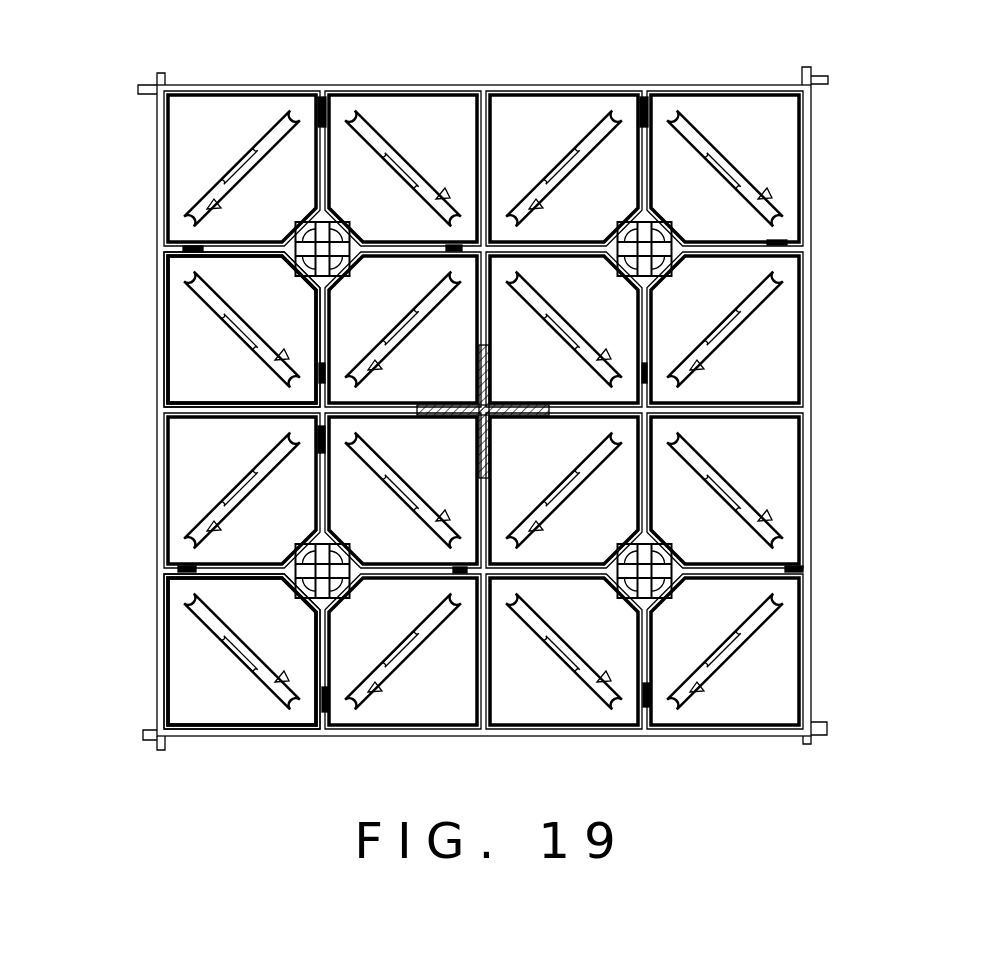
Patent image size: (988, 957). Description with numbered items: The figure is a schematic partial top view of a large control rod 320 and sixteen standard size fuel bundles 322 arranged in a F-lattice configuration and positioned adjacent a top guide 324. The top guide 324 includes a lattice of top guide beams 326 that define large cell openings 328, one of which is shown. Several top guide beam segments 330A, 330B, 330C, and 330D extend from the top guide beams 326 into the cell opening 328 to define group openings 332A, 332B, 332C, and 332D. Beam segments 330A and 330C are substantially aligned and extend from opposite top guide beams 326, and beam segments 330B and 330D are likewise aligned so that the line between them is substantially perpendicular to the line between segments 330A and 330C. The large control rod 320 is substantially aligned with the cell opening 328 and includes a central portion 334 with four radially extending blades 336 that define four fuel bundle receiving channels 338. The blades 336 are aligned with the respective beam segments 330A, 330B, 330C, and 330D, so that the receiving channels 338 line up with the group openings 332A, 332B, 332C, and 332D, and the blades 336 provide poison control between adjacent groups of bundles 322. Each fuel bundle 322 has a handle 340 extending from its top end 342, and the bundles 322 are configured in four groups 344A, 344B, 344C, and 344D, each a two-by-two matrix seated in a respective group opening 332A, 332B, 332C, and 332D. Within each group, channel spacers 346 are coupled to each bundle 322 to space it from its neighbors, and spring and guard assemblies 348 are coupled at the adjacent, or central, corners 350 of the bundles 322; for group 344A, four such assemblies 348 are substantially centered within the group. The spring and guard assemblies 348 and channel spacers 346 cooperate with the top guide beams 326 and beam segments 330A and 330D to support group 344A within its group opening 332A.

The large control rod 320 is at (497, 358).
The standard size fuel bundle 322 is at (755, 115).
The top guide 324 is at (150, 44).
The top guide beam 326 is at (342, 783).
The cell opening 328 is at (189, 704).
The top guide beam segment 330A is at (245, 408).
The top guide beam segment 330B is at (480, 163).
The top guide beam segment 330C is at (733, 405).
The top guide beam segment 330D is at (490, 676).
The group opening 332A is at (239, 714).
The group opening 332B is at (186, 394).
The group opening 332C is at (783, 151).
The group opening 332D is at (783, 714).
The central portion 334 is at (497, 378).
The blade 336 is at (438, 291).
The fuel bundle receiving channel 338 is at (466, 378).
The handle 340 is at (264, 138).
The top end 342 is at (425, 690).
The group of fuel bundles 344A is at (208, 656).
The group of fuel bundles 344B is at (218, 280).
The group of fuel bundles 344C is at (549, 126).
The group of fuel bundles 344D is at (736, 684).
The channel spacer 346 is at (344, 108).
The spring and guard assembly 348 is at (305, 544).
The adjacent corner 350 is at (310, 540).